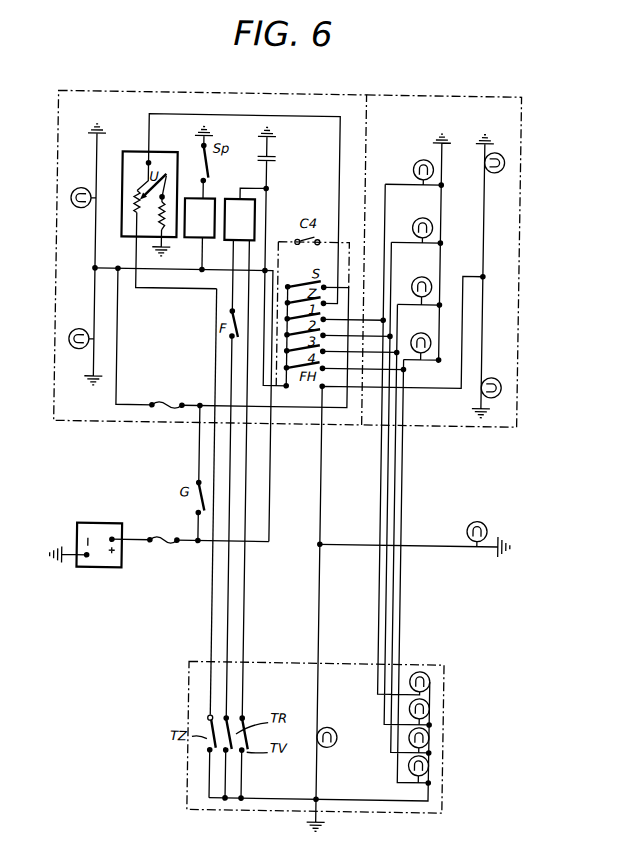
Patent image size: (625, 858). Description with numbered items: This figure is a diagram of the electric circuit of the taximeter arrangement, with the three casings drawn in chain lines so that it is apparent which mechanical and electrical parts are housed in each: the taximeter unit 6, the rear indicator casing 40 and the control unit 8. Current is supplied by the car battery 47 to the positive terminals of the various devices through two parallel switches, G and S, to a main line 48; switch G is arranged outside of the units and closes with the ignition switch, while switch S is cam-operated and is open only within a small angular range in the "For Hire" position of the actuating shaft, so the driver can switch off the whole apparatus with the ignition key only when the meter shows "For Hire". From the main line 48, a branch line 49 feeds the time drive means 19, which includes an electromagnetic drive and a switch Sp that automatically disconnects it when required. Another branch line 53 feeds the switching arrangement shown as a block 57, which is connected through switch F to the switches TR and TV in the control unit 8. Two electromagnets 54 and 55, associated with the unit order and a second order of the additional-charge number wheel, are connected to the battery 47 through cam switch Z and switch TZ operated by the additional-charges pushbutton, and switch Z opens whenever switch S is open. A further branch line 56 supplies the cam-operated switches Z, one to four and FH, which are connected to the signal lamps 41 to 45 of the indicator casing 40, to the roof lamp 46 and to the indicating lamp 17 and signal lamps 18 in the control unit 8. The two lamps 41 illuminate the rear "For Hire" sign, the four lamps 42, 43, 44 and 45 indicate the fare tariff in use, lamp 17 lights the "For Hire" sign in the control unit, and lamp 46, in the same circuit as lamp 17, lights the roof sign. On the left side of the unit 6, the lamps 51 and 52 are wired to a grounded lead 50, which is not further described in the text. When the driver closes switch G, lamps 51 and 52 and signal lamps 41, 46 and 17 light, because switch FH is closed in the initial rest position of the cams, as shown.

The taximeter unit casing 6 is at (96, 425).
The control unit 8 is at (232, 813).
The indicating lamp 17 is at (335, 748).
The signal lamps 18 is at (433, 688).
The time drive means 19 is at (189, 200).
The rear casing 40 is at (463, 426).
The signal lamps 41 is at (502, 161).
The signal lamp 42 is at (419, 334).
The signal lamp 43 is at (419, 278).
The signal lamp 44 is at (414, 219).
The signal lamp 45 is at (414, 162).
The roof lamp 46 is at (486, 520).
The battery 47 is at (101, 571).
The main line 48 is at (156, 282).
The branch line 49 is at (203, 256).
The conductor 50 is at (92, 236).
The lamp 51 is at (68, 201).
The lamp 52 is at (68, 342).
The branch line 53 is at (266, 202).
The electromagnet 54 is at (133, 191).
The electromagnet 55 is at (161, 243).
The branch line 56 is at (262, 359).
The switching arrangement 57 is at (226, 200).